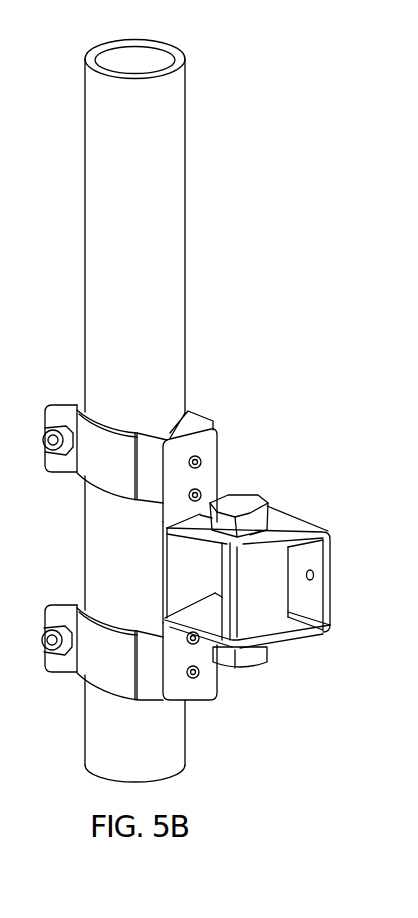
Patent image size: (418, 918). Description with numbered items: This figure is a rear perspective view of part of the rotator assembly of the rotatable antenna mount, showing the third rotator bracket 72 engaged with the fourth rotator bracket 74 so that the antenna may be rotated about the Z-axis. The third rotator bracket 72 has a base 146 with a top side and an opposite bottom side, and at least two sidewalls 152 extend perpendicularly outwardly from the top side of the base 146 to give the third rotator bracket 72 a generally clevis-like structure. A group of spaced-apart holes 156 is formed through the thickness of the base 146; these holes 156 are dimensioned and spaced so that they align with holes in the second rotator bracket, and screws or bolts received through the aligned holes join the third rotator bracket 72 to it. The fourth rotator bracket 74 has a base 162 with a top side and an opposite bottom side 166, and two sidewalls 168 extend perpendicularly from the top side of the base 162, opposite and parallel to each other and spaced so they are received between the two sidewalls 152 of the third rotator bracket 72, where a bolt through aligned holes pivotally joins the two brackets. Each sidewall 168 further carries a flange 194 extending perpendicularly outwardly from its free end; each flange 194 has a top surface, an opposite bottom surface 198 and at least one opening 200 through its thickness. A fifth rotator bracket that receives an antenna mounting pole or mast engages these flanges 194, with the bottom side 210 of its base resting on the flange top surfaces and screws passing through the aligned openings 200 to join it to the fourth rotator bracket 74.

The third rotator bracket 72 is at (311, 512).
The fourth rotator bracket 74 is at (210, 705).
The base 146 is at (332, 620).
The sidewalls 152 is at (280, 527).
The holes 156 is at (313, 573).
The base 162 is at (263, 613).
The bottom side 166 is at (312, 606).
The sidewalls 168 is at (212, 500).
The flange 194 is at (177, 470).
The bottom surface 198 is at (212, 443).
The opening 200 is at (187, 674).
The bottom side 210 is at (193, 565).